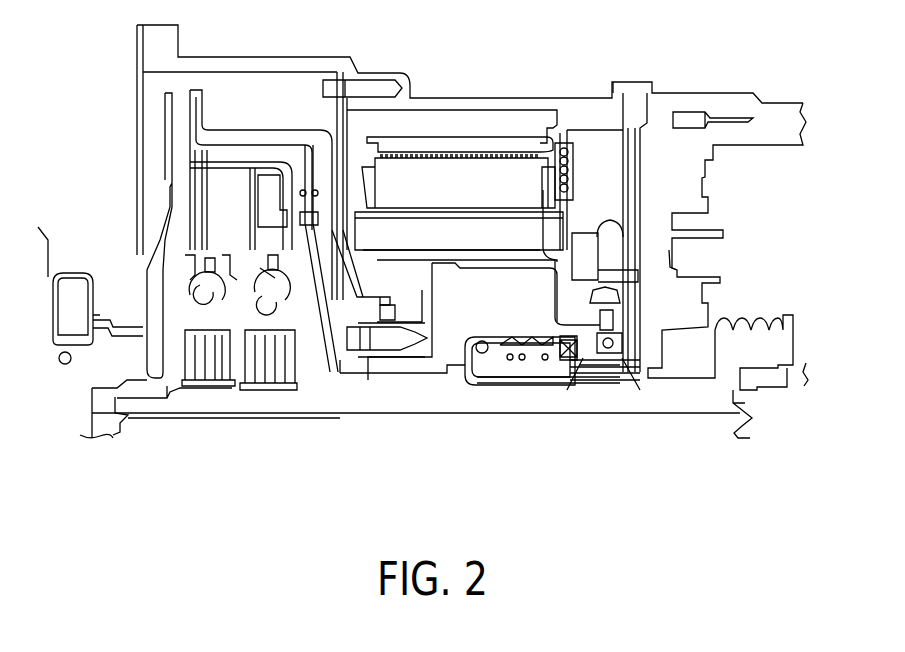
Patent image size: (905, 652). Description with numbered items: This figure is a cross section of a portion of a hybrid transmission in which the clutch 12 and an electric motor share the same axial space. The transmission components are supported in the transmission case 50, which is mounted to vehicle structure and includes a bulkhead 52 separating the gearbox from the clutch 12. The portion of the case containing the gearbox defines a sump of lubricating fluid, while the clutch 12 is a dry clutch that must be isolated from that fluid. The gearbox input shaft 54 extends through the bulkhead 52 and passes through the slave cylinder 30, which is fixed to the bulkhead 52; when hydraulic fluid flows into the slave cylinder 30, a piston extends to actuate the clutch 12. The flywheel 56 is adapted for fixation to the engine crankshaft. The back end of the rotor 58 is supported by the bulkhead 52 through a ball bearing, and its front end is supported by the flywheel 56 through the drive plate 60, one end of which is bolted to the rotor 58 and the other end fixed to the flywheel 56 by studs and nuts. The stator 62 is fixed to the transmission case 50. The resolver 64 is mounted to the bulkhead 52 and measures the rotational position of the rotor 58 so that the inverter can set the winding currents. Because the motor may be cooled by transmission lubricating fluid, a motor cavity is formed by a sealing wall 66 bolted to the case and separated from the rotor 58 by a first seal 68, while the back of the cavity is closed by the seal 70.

The clutch 12 is at (222, 173).
The slave cylinder 30 is at (527, 340).
The transmission case 50 is at (531, 96).
The bulkhead 52 is at (703, 178).
The gearbox input shaft 54 is at (148, 393).
The flywheel 56 is at (158, 132).
The rotor 58 is at (477, 245).
The drive plate 60 is at (330, 265).
The stator 62 is at (460, 148).
The resolver 64 is at (630, 370).
The sealing wall 66 is at (353, 285).
The first seal 68 is at (392, 307).
The seal 70 is at (587, 350).